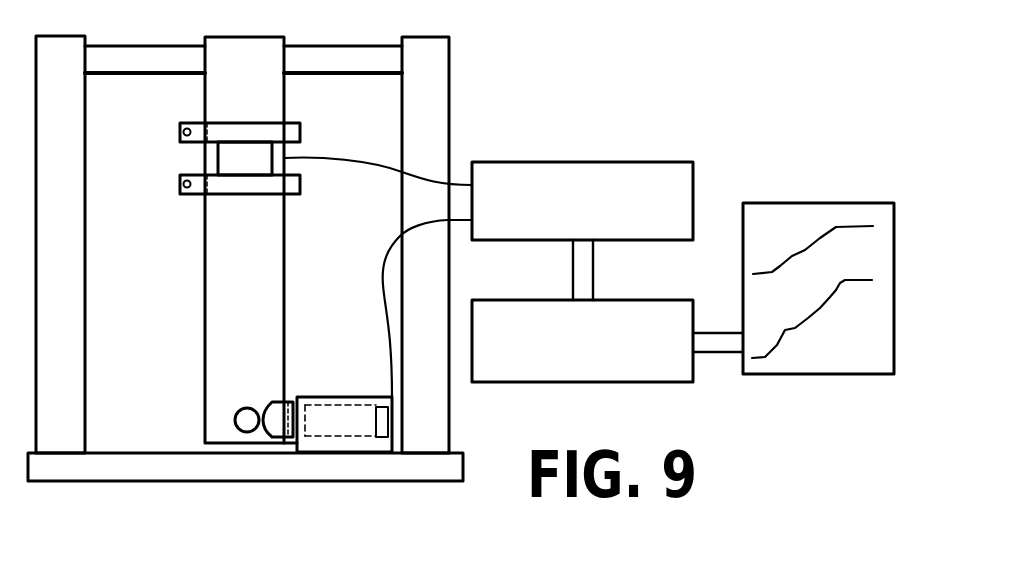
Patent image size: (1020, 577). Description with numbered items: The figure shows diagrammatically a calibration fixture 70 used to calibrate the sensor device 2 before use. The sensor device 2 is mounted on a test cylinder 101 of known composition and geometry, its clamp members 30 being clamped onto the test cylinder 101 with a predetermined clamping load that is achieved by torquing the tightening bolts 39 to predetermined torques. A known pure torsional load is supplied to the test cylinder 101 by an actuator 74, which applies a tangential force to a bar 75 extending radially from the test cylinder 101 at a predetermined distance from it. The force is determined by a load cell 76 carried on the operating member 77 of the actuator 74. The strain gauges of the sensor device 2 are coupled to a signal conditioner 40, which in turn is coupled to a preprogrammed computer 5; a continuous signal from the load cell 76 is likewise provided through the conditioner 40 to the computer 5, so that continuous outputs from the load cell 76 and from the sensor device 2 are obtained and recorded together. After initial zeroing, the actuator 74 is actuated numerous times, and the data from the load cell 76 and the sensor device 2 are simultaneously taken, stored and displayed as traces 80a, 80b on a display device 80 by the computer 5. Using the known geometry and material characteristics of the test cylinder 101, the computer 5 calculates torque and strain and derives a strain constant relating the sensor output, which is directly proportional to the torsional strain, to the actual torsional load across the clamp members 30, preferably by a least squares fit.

The calibration fixture 70 is at (455, 71).
The sensor device 2 is at (311, 106).
The clamp members 30 is at (180, 132).
The tightening bolts 39 is at (184, 132).
The test cylinder 101 is at (256, 280).
The bar 75 is at (243, 410).
The operating member 77 is at (282, 402).
The actuator 74 is at (366, 396).
The load cell 76 is at (377, 440).
The signal conditioner 40 is at (572, 161).
The computer 5 is at (620, 300).
The display device 80 is at (818, 266).
The trace 80a is at (790, 258).
The trace 80b is at (830, 297).